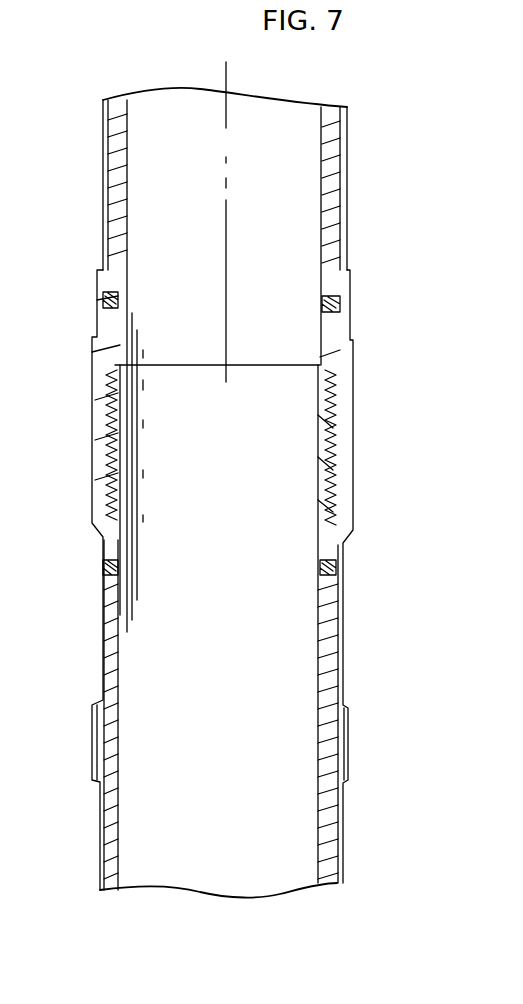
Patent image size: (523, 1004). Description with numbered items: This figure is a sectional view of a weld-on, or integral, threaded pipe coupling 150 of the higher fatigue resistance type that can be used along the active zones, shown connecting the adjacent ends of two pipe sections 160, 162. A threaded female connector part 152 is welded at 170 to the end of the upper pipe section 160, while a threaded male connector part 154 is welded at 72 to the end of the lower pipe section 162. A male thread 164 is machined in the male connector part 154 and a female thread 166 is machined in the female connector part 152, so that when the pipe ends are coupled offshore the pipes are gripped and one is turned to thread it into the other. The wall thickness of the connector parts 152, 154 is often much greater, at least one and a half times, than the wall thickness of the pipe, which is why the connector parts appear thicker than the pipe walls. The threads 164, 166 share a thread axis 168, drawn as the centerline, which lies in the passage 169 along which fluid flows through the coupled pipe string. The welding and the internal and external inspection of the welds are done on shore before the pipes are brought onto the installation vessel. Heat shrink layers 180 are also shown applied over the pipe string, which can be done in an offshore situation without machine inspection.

The threaded pipe coupling 150 is at (59, 353).
The threaded female connector part 152 is at (104, 415).
The threaded male connector part 154 is at (108, 478).
The pipe section 160 is at (110, 113).
The pipe section 162 is at (104, 862).
The male thread 164 is at (330, 470).
The female thread 166 is at (325, 425).
The thread axis 168 is at (226, 82).
The passage 169 is at (323, 130).
The weld 170 is at (110, 300).
The heat shrink layers 180 is at (341, 590).
The lower seal 72 is at (108, 565).